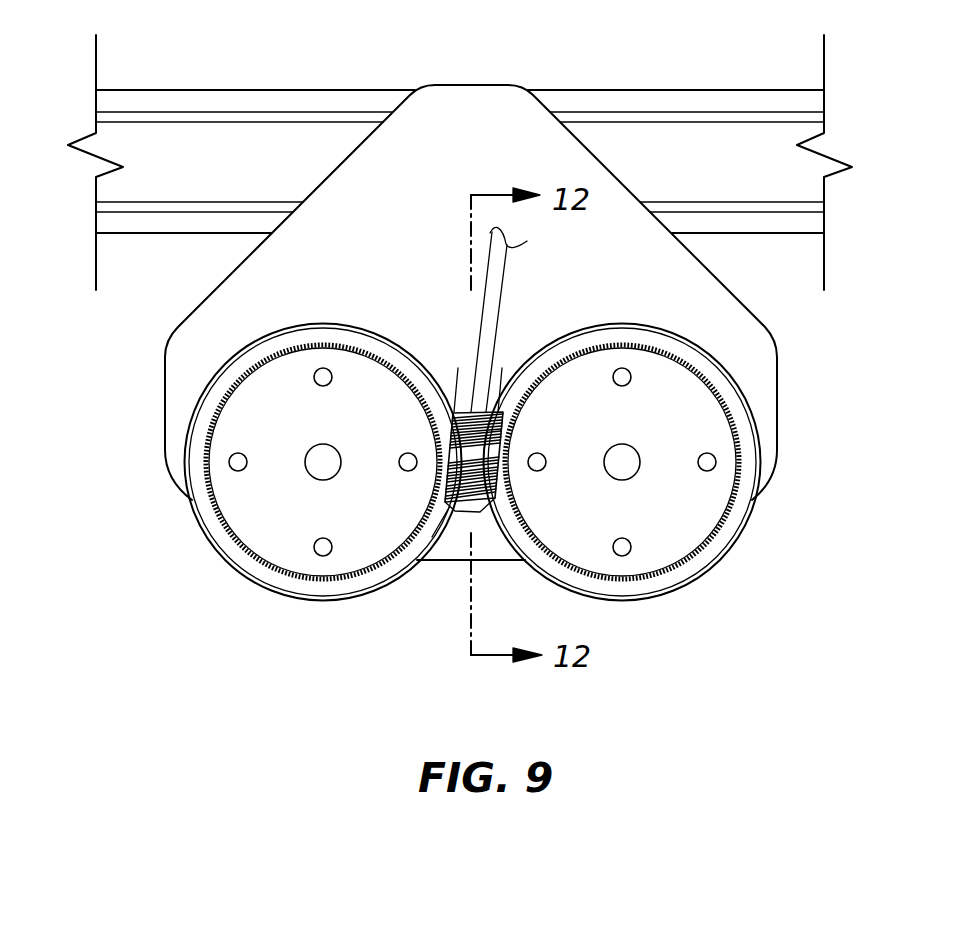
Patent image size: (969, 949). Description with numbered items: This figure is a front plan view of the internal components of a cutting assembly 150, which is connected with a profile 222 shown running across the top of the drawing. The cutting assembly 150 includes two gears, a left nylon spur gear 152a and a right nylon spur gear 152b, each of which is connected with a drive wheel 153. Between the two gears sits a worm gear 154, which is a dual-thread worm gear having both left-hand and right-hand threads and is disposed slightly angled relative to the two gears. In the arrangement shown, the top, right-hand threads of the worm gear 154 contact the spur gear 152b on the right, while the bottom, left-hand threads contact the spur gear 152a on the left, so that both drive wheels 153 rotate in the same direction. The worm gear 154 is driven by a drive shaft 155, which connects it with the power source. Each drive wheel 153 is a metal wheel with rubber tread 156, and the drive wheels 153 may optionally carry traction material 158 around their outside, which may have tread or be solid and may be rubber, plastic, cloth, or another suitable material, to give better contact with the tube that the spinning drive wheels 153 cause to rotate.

The profile 222 is at (217, 103).
The cutting assembly 150 is at (138, 535).
The nylon spur gear 152a is at (403, 532).
The nylon spur gear 152b is at (702, 530).
The drive wheel 153 is at (362, 583).
The worm gear 154 is at (460, 387).
The drive shaft 155 is at (488, 316).
The rubber tread 156 is at (478, 508).
The traction material 158 is at (257, 585).